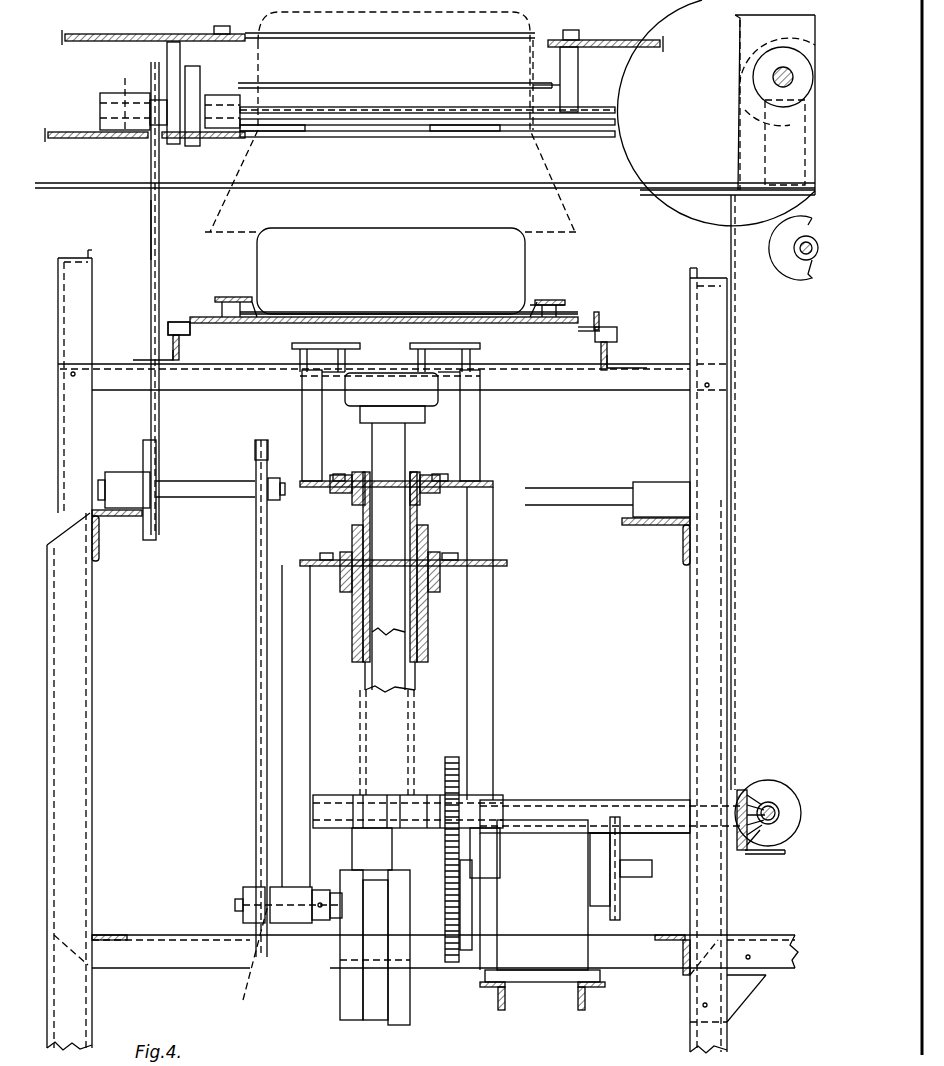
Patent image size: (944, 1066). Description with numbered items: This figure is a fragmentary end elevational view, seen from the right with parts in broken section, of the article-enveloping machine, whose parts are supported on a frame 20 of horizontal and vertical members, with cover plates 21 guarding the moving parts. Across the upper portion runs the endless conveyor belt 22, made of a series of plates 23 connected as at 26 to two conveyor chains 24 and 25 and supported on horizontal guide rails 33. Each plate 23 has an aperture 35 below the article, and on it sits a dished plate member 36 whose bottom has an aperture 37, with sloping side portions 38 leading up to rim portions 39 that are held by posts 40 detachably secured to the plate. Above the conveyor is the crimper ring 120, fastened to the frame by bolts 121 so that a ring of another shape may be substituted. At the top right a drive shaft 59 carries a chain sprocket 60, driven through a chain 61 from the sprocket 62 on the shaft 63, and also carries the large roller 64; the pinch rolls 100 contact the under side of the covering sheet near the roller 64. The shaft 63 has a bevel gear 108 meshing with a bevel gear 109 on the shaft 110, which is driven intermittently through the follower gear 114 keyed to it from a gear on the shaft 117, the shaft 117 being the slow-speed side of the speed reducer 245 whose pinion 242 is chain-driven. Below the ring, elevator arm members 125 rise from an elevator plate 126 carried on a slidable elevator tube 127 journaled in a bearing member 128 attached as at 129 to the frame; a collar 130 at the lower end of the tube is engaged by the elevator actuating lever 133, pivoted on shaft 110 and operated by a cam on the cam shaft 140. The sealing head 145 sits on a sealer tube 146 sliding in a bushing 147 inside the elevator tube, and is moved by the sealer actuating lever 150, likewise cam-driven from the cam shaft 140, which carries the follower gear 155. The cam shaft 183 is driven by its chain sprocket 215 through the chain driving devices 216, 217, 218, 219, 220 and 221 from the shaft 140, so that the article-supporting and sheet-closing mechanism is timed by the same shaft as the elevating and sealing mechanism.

The frame 20 is at (92, 720).
The cover plates 21 is at (176, 322).
The endless conveyor belt 22 is at (600, 312).
The plates 23 is at (230, 323).
The conveyor chain 24 is at (178, 304).
The conveyor chain 25 is at (617, 332).
The connection 26 is at (180, 338).
The horizontal guide rails 33 is at (178, 365).
The aperture 35 is at (490, 328).
The dished plate member 36 is at (515, 300).
The aperture 37 is at (485, 324).
The sloping side portions 38 is at (253, 300).
The rim portions 39 is at (555, 318).
The posts 40 is at (225, 306).
The drive shaft 59 is at (778, 82).
The chain sprocket 60 is at (758, 85).
The chain 61 is at (736, 350).
The sprocket 62 is at (750, 790).
The shaft 63 is at (772, 805).
The large roller 64 is at (710, 165).
The pinch rolls 100 is at (780, 247).
The bevel gear 108 is at (805, 850).
The bevel gear 109 is at (740, 795).
The shaft 110 is at (657, 812).
The follower gear 114 is at (480, 800).
The shaft 117 is at (485, 800).
The crimper ring 120 is at (578, 75).
The bolts 121 is at (222, 26).
The elevator arm members 125 is at (302, 410).
The elevator plate 126 is at (495, 490).
The elevator tube 127 is at (415, 682).
The bearing member 128 is at (418, 625).
The attachment 129 is at (320, 575).
The collar 130 is at (340, 958).
The elevator actuating lever 133 is at (383, 795).
The cam shaft 140 is at (248, 962).
The sealing head 145 is at (470, 395).
The sealer tube 146 is at (405, 444).
The bushing 147 is at (418, 474).
The sealer actuating lever 150 is at (452, 757).
The follower gear 155 is at (460, 960).
The cam shaft 183 is at (130, 90).
The chain sprocket 215 is at (150, 152).
The chain driving device 216 is at (150, 228).
The chain driving device 217 is at (143, 455).
The chain driving device 218 is at (210, 481).
The chain driving device 219 is at (268, 452).
The chain driving device 220 is at (256, 560).
The chain driving device 221 is at (255, 870).
The pinion 242 is at (620, 903).
The speed reducer 245 is at (568, 830).